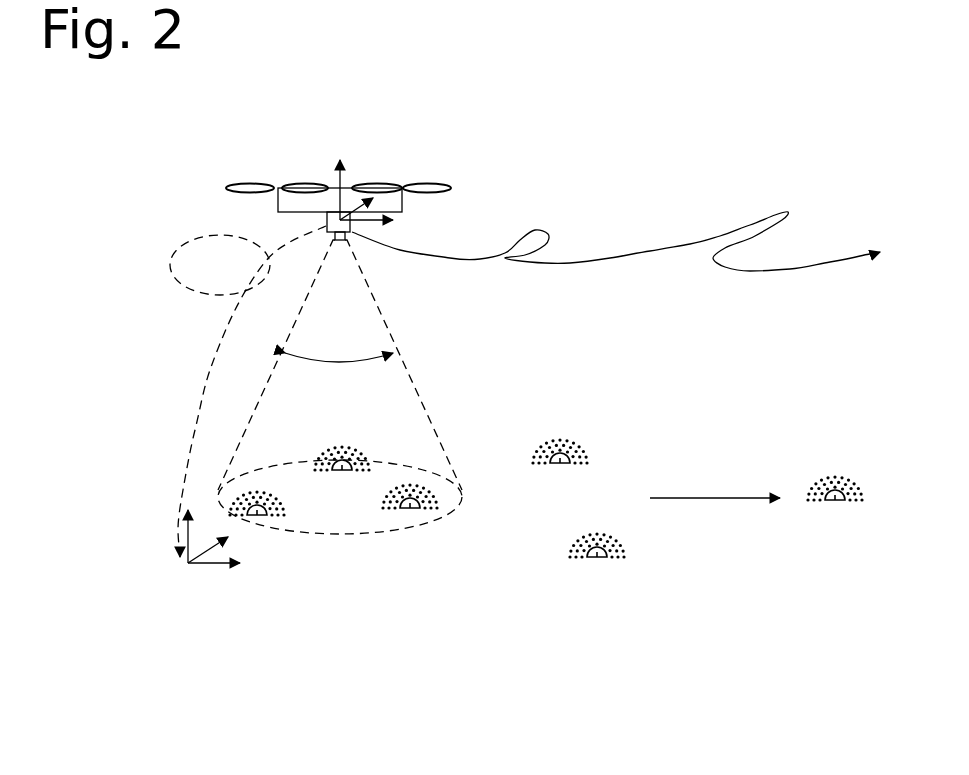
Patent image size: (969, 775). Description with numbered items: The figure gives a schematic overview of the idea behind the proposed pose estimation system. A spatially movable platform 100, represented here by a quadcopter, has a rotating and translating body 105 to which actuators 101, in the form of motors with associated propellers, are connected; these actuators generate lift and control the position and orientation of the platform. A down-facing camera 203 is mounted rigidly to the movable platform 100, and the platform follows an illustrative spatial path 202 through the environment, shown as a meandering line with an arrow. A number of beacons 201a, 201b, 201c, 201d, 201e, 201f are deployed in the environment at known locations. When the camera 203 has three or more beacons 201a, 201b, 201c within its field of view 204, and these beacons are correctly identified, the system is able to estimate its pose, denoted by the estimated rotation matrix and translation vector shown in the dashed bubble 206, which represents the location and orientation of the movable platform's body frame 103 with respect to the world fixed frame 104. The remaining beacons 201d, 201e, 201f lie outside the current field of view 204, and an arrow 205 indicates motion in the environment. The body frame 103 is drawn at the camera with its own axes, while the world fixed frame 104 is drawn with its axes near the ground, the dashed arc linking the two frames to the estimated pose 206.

The spatially movable platform 100 is at (316, 100).
The actuators 101 is at (248, 185).
The body frame 103 is at (325, 218).
The world fixed frame 104 is at (205, 583).
The body 105 is at (345, 200).
The beacon 201a is at (257, 515).
The beacon 201b is at (342, 465).
The beacon 201c is at (410, 508).
The beacon 201d is at (560, 463).
The beacon 201e is at (597, 557).
The beacon 201f is at (835, 500).
The spatial path 202 is at (613, 260).
The camera 203 is at (340, 241).
The field of view 204 is at (339, 350).
The direction of movement 205 is at (695, 498).
The estimated camera pose [R|t] 206 is at (203, 295).